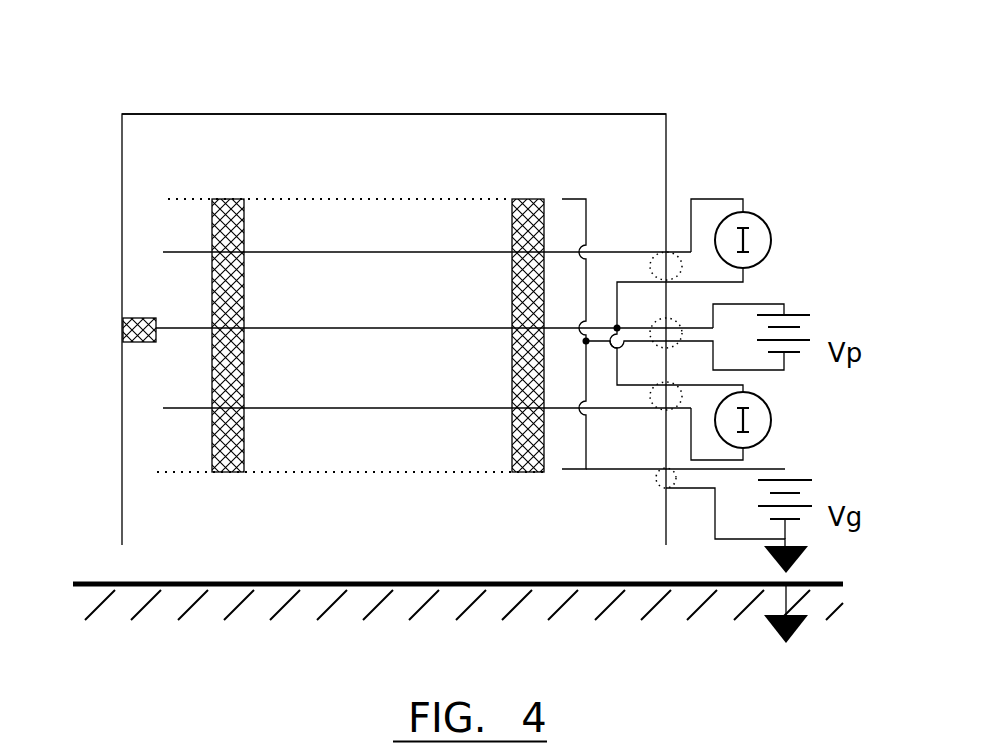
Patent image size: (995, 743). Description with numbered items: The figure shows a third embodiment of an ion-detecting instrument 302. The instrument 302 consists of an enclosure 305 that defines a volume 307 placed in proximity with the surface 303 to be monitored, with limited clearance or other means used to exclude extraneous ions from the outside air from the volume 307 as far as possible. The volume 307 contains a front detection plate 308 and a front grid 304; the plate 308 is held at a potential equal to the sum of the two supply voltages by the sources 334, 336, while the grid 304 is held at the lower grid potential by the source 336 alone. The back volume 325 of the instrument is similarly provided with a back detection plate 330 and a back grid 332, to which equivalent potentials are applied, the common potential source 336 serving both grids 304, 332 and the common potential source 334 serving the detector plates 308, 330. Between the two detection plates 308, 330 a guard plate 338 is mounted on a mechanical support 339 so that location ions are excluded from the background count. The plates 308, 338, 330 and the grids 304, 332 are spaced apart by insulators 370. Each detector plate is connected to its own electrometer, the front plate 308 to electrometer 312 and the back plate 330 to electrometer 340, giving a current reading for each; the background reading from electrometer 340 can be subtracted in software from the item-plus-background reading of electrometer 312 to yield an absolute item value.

The instrument 302 is at (530, 101).
The surface to be monitored 303 is at (458, 641).
The front grid 304 is at (318, 473).
The enclosure 305 is at (193, 114).
The volume 307 is at (357, 552).
The front detection plate 308 is at (300, 410).
The electrometer 312 is at (773, 419).
The back volume 325 is at (322, 185).
The back detection plate 330 is at (320, 252).
The back grid 332 is at (432, 199).
The potential source 334 is at (803, 287).
The potential source 336 is at (825, 484).
The guard plate 338 is at (377, 365).
The mechanical support 339 is at (113, 313).
The electrometer 340 is at (763, 220).
The insulators 370 is at (212, 283).